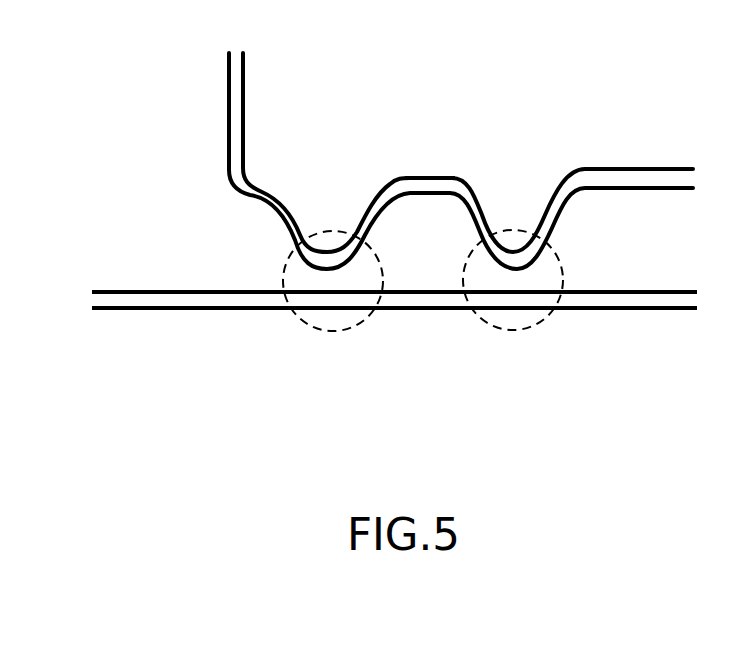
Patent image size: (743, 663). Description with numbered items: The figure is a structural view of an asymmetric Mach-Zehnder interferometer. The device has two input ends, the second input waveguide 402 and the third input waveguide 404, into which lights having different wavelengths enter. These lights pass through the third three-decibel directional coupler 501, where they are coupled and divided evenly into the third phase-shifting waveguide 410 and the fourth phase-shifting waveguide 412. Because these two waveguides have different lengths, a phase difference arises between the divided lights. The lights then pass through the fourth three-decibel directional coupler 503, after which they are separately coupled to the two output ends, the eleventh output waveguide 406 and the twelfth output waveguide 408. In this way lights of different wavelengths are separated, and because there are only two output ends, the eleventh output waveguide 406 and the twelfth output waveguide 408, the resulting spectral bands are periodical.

The second input waveguide 402 is at (238, 125).
The third input waveguide 404 is at (193, 300).
The eleventh output waveguide 406 is at (615, 178).
The twelfth output waveguide 408 is at (615, 302).
The third phase-shifting waveguide 410 is at (425, 188).
The fourth phase-shifting waveguide 412 is at (415, 294).
The third 3 dB directional coupler 501 is at (333, 331).
The fourth 3 dB directional coupler 503 is at (507, 330).